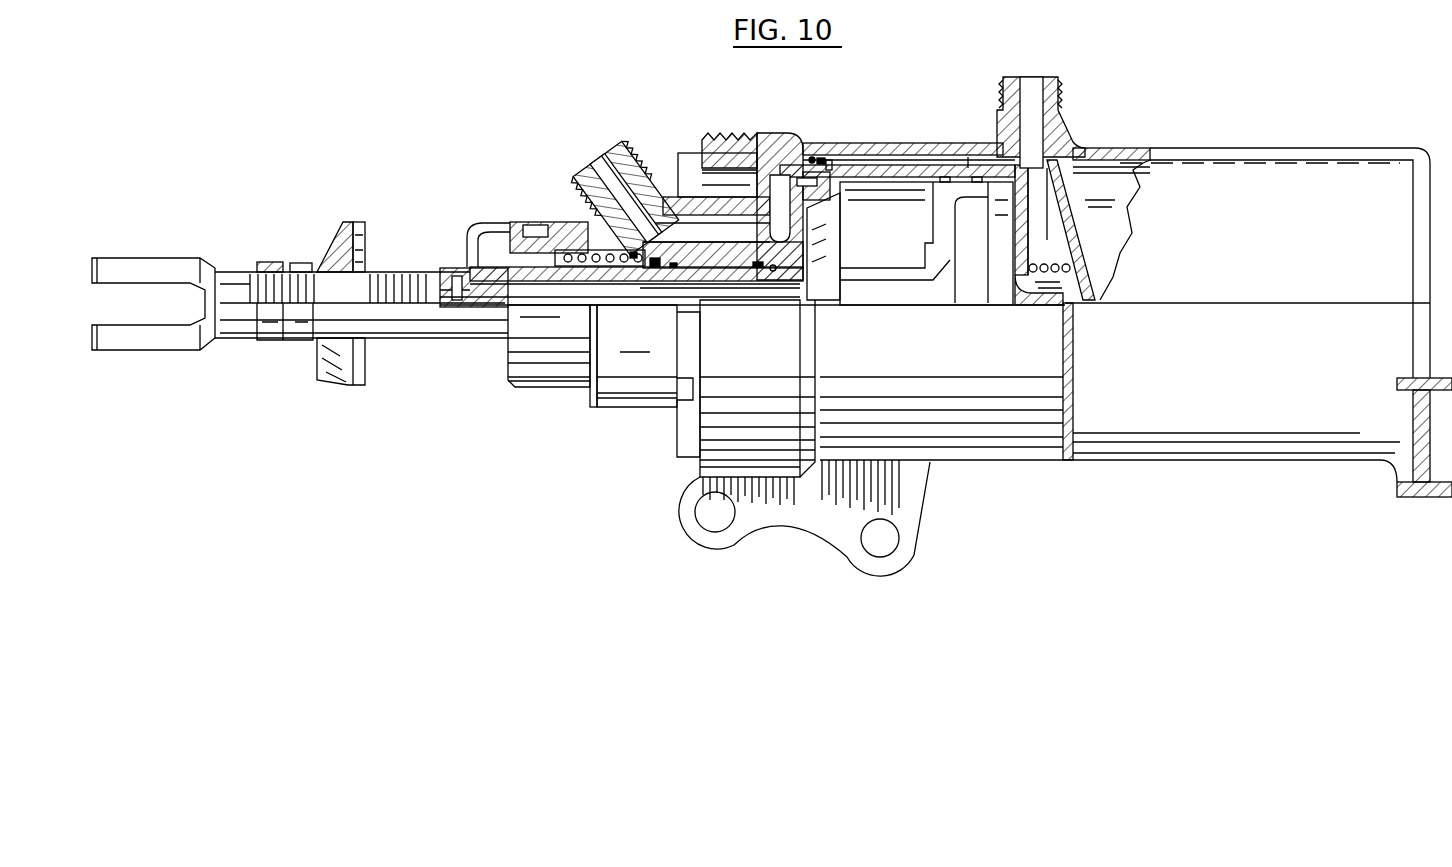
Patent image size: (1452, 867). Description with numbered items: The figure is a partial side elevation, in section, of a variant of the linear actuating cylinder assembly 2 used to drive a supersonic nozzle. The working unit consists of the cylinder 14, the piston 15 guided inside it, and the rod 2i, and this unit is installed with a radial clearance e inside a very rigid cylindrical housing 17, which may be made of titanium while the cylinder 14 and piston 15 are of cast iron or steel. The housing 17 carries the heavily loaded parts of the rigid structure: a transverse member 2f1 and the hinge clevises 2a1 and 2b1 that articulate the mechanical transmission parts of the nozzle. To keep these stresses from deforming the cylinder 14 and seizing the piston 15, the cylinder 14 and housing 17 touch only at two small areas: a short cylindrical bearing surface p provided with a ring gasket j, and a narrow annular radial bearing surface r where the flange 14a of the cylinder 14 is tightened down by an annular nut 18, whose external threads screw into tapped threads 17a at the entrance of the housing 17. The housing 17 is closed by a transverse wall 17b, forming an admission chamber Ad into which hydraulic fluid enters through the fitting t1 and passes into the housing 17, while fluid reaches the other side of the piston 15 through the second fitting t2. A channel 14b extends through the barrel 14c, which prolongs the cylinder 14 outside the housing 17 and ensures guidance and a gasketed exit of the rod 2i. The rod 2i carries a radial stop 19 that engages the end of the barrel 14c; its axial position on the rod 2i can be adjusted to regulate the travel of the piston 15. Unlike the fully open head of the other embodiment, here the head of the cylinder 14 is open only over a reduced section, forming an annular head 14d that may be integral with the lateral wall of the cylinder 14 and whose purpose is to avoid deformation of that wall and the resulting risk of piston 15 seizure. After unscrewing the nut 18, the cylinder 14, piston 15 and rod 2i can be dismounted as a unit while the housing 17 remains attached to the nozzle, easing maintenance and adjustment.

The actuating cylinder assembly 2 is at (1146, 151).
The rod 2i is at (397, 333).
The radial stop 19 is at (329, 365).
The cylinder 14 is at (752, 291).
The flange 14a is at (787, 145).
The channel 14b is at (713, 233).
The barrel 14c is at (525, 382).
The annular head 14d is at (1027, 237).
The piston 15 is at (797, 253).
The cylindrical housing 17 is at (913, 146).
The tapped threads 17a is at (717, 147).
The transverse wall 17b is at (1138, 188).
The annular nut 18 is at (697, 148).
The clevis 2a1 is at (707, 548).
The clevis 2b1 is at (861, 582).
The transverse member 2f1 is at (1413, 425).
The fitting t1 is at (1060, 110).
The second fitting t2 is at (597, 198).
The annular radial bearing surface r is at (812, 156).
The cylindrical bearing surface p is at (822, 160).
The ring gasket j is at (832, 168).
The radial clearance e is at (968, 168).
The admission chamber Ad is at (1059, 219).